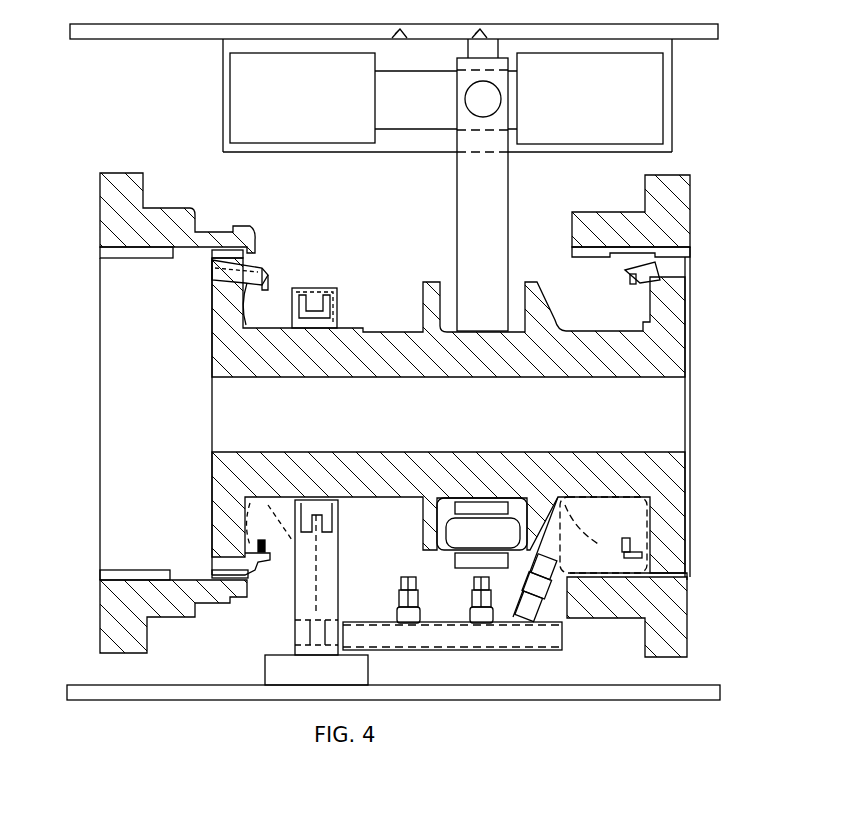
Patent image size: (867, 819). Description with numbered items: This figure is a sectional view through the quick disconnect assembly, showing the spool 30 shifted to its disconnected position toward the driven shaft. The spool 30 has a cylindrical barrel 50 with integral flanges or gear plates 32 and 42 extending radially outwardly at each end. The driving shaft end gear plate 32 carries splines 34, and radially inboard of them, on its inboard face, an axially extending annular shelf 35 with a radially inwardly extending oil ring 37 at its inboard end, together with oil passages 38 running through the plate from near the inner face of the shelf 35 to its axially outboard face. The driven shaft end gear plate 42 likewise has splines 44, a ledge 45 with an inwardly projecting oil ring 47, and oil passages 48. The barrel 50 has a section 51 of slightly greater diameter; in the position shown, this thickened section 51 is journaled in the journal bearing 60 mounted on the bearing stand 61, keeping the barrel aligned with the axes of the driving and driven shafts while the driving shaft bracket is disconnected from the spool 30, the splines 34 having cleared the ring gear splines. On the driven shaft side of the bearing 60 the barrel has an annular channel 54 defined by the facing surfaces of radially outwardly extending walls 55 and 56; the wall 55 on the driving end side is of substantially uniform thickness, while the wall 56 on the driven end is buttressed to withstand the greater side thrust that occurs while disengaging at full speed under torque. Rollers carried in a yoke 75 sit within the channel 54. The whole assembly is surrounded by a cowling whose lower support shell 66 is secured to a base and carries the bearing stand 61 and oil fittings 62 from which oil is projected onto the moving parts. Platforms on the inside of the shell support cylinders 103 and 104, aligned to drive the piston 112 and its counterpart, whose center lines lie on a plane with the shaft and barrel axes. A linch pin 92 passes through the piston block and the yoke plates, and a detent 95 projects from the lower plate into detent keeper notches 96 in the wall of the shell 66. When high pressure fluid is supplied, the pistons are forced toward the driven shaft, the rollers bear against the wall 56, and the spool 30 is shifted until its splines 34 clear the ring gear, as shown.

The spool 30 is at (372, 320).
The driving shaft end gear plate 32 is at (423, 416).
The splines 34 is at (218, 257).
The annular shelf 35 is at (247, 295).
The oil ring 37 is at (256, 533).
The oil passages 38 is at (217, 560).
The driven shaft end gear plate 42 is at (640, 322).
The splines 44 is at (683, 249).
The ledge 45 is at (638, 289).
The oil ring 47 is at (620, 283).
The oil passages 48 is at (668, 283).
The barrel 50 is at (368, 359).
The thickened section 51 is at (347, 320).
The annular channel 54 is at (450, 502).
The wall 55 is at (423, 292).
The wall 56 is at (545, 298).
The journal bearing 60 is at (286, 312).
The bearing stand 61 is at (338, 573).
The oil fittings 62 is at (437, 620).
The lower support shell 66 is at (254, 700).
The yoke 75 is at (512, 228).
The linch pin 92 is at (466, 95).
The detent 95 is at (488, 50).
The detent keeper notches 96 is at (400, 36).
The cylinder 103 is at (245, 115).
The cylinder 104 is at (641, 118).
The piston 112 is at (422, 118).